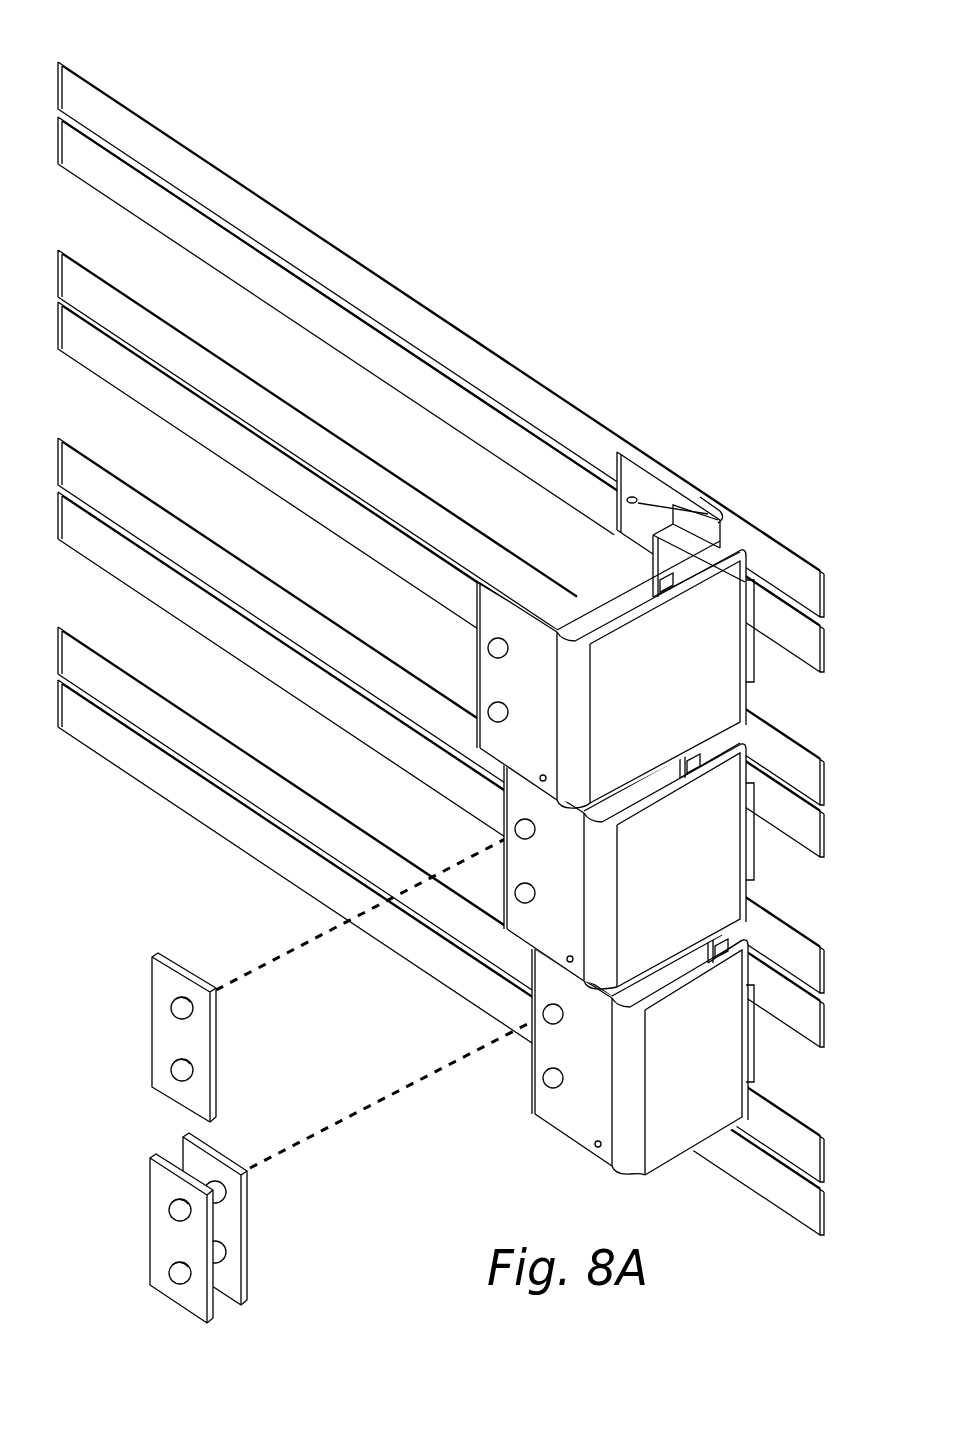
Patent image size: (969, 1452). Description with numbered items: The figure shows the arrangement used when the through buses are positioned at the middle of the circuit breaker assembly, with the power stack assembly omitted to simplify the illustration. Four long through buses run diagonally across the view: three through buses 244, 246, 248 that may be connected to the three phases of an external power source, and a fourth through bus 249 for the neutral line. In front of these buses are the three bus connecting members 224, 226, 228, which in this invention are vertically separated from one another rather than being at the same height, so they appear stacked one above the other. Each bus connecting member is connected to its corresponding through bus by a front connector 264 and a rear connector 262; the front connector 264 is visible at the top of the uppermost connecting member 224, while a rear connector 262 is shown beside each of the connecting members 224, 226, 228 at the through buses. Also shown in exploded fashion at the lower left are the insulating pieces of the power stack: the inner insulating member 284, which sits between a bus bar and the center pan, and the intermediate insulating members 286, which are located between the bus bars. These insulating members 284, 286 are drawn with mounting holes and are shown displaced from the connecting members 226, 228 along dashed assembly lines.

The through bus 244 is at (57, 110).
The through bus 246 is at (57, 297).
The through bus 248 is at (57, 487).
The through bus for the neutral line 249 is at (56, 673).
The main bus connecting member 224 is at (611, 630).
The main bus connecting member 226 is at (710, 885).
The main bus connecting member 228 is at (723, 1068).
The rear connector 262 is at (753, 664).
The front connector 264 is at (650, 573).
The inner insulating member 284 is at (250, 1281).
The intermediate insulating member 286 is at (172, 1035).